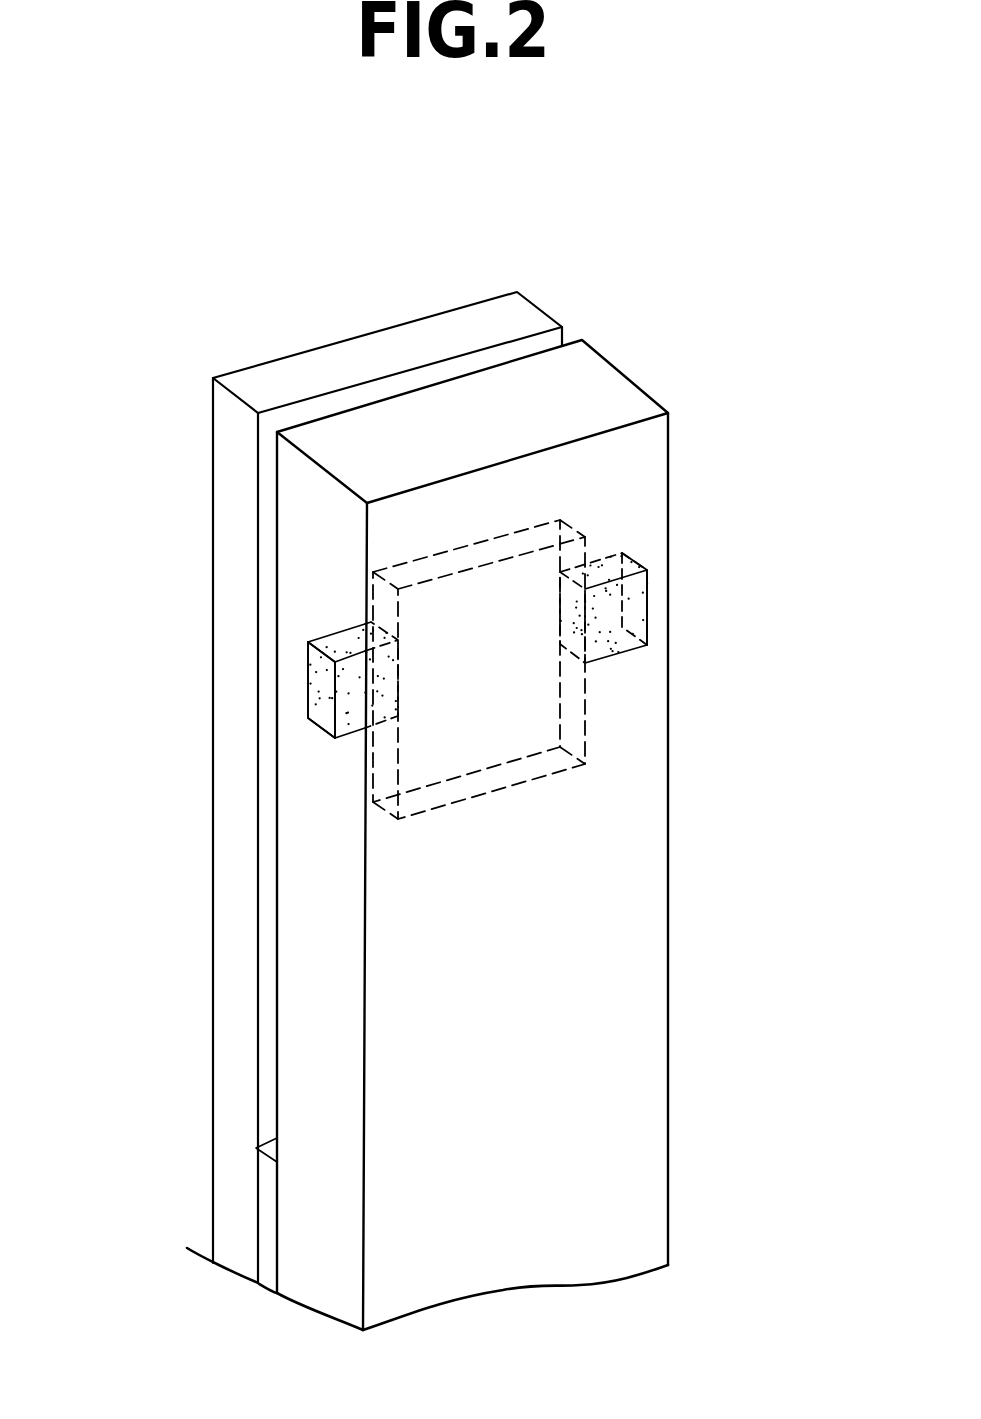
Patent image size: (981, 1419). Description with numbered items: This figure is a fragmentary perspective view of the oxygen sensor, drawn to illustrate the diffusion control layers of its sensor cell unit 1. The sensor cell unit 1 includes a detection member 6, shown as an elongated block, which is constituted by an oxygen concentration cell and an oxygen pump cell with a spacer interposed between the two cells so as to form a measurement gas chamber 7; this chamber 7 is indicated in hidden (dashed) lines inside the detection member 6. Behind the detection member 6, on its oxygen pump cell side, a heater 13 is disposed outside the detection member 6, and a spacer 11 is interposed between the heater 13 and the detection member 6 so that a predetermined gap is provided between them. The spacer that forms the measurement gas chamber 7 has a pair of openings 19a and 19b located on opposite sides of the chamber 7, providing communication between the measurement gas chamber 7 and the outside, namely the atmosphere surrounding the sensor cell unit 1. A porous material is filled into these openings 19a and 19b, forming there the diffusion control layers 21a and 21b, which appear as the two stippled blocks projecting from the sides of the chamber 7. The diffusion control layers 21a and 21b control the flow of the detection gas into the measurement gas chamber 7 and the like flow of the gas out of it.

The sensor cell unit 1 is at (676, 318).
The detection member 6 is at (650, 392).
The measurement gas chamber 7 is at (533, 708).
The spacer 11 is at (265, 1190).
The heater 13 is at (318, 366).
The opening 19a is at (313, 668).
The opening 19b is at (637, 588).
The diffusion control layer 21a is at (313, 707).
The diffusion control layer 21b is at (647, 617).